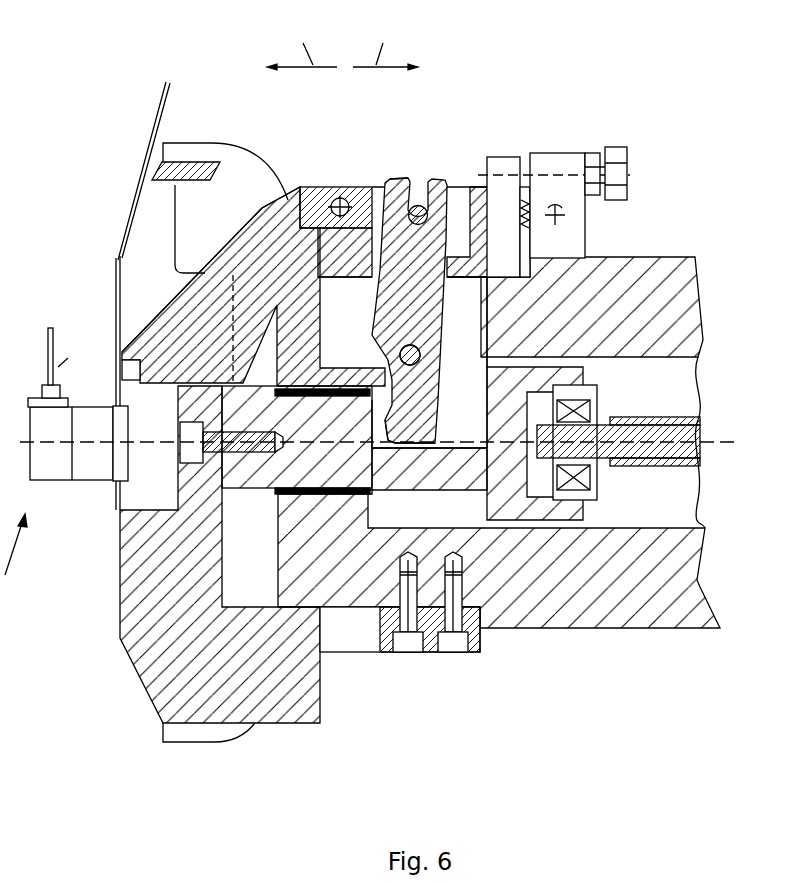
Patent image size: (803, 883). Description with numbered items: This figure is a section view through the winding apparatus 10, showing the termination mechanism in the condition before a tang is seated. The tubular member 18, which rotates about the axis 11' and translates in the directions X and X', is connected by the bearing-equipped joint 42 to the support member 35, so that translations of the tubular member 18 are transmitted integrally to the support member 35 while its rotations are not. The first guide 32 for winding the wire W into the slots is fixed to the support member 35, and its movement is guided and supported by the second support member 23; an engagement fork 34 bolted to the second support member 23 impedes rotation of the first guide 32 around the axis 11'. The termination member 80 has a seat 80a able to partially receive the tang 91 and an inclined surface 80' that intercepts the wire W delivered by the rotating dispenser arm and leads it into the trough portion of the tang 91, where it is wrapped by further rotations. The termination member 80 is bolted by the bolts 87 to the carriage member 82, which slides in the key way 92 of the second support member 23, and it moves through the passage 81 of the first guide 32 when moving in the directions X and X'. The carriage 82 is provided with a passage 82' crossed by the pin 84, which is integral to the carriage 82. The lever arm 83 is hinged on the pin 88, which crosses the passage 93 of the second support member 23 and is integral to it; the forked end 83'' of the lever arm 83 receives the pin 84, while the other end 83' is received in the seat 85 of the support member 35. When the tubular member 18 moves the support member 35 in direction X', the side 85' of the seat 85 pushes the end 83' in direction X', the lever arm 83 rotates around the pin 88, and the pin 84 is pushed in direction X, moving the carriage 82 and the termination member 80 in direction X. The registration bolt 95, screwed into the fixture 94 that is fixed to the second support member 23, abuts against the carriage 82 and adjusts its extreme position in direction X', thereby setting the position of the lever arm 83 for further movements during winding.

The wire W is at (160, 96).
The direction X is at (302, 46).
The direction X' is at (385, 46).
The clamping device 10 is at (29, 559).
The axis 11' is at (386, 412).
The tubular member 18 is at (670, 468).
The second support member 23 is at (625, 290).
The first guide 32 is at (275, 690).
The engagement fork 34 is at (365, 636).
The support member 35 is at (473, 474).
The joint 42 is at (598, 433).
The termination member 80 is at (304, 253).
The inclined surface 80' is at (211, 264).
The seat 80a is at (128, 370).
The passage 81 is at (143, 248).
The carriage member 82 is at (508, 184).
The passage 82' is at (483, 199).
The lever arm 83 is at (389, 310).
The end of lever arm 83' is at (434, 427).
The end of lever arm 83'' is at (390, 145).
The pin 84 is at (418, 204).
The seat 85 is at (429, 461).
The side of seat 85' is at (295, 454).
The bolts 87 is at (350, 196).
The pin 88 is at (392, 362).
The tang 91 is at (63, 372).
The key way 92 is at (305, 272).
The passage 93 is at (461, 342).
The fixture 94 is at (557, 165).
The registration bolt 95 is at (619, 170).